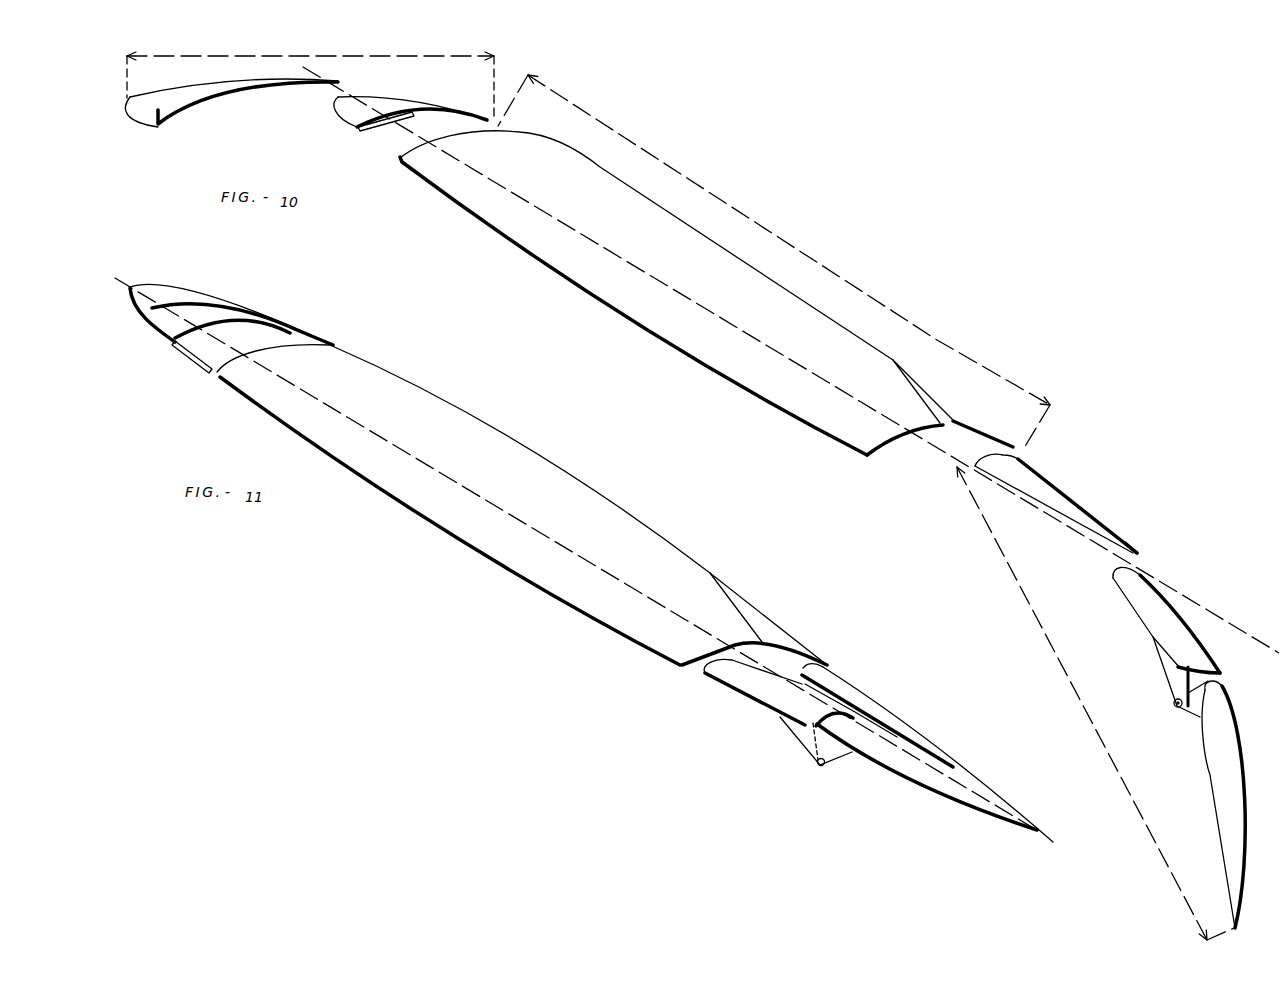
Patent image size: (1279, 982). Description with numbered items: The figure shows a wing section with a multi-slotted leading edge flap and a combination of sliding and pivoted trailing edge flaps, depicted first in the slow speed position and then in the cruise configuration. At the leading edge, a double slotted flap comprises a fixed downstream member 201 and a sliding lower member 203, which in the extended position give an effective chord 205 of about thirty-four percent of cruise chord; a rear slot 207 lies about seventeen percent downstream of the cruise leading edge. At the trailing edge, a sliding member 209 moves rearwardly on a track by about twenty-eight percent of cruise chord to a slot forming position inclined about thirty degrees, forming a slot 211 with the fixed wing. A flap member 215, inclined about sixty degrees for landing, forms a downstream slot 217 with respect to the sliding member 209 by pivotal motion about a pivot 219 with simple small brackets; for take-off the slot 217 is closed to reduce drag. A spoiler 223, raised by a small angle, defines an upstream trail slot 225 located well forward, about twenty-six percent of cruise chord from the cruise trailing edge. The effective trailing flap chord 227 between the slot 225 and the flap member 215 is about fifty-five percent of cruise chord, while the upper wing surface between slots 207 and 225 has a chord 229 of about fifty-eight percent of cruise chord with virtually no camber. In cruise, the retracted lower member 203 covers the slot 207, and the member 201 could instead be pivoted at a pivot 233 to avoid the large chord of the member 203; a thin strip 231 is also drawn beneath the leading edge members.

In FIG. 10, the fixed downstream member 201 is at (380, 97).
In FIG. 11, the fixed downstream member 201 is at (257, 324).
In FIG. 10, the sliding lower member 203 is at (233, 92).
In FIG. 11, the sliding lower member 203 is at (227, 297).
In FIG. 10, the effective chord 205 is at (292, 54).
In FIG. 10, the rear slot 207 is at (502, 128).
In FIG. 11, the rear slot 207 is at (307, 335).
In FIG. 10, the sliding member 209 is at (1062, 517).
In FIG. 10, the slot 211 is at (1140, 558).
In FIG. 10, the flap member 215 is at (1207, 770).
In FIG. 10, the downstream slot 217 is at (1222, 684).
In FIG. 10, the pivot 219 is at (1175, 706).
In FIG. 10, the spoiler 223 is at (958, 383).
In FIG. 10, the upstream trail slot 225 is at (1018, 450).
In FIG. 10, the effective trailing flap chord 227 is at (1048, 645).
In FIG. 10, the upper wing surface chord 229 is at (816, 259).
In FIG. 10, the spacer strip 231 is at (390, 128).
In FIG. 11, the spacer strip 231 is at (195, 362).
In FIG. 11, the pivot 233 is at (160, 325).